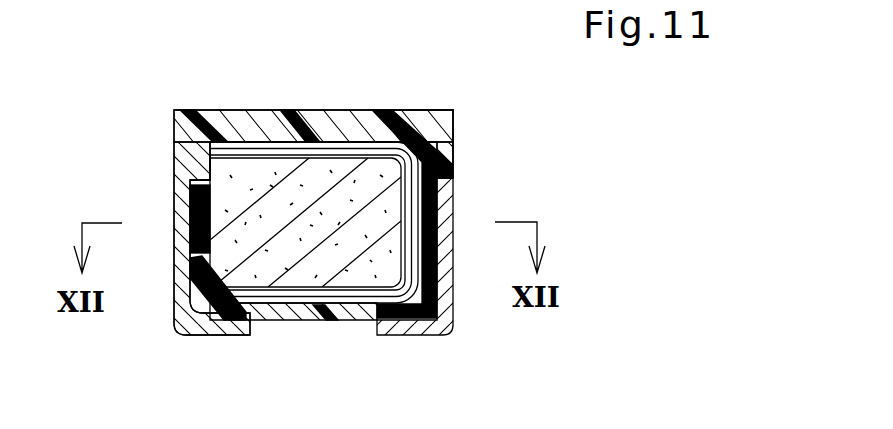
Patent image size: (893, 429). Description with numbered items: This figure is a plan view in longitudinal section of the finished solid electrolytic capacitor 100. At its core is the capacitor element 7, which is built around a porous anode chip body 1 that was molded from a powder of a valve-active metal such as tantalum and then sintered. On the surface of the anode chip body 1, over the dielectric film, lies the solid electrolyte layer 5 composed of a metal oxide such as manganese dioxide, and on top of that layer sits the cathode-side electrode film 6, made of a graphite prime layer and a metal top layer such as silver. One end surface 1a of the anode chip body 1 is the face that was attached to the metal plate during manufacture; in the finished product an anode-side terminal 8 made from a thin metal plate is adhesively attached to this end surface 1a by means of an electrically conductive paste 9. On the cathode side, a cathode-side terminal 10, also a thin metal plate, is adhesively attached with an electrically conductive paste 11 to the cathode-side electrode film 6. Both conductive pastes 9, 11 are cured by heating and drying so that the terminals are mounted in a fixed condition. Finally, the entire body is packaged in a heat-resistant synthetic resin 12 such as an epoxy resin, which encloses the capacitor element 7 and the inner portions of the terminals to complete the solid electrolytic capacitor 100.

The solid electrolytic capacitor 100 is at (452, 91).
The anode chip body 1 is at (323, 200).
The end surface 1a is at (210, 178).
The solid electrolyte layer 5 is at (378, 147).
The cathode-side electrode film 6 is at (350, 316).
The capacitor element 7 is at (280, 107).
The anode-side terminal 8 is at (186, 315).
The electrically conductive paste 9 is at (203, 238).
The cathode-side terminal 10 is at (453, 236).
The electrically conductive paste 11 is at (437, 212).
The heat-resistant synthetic resin 12 is at (440, 135).